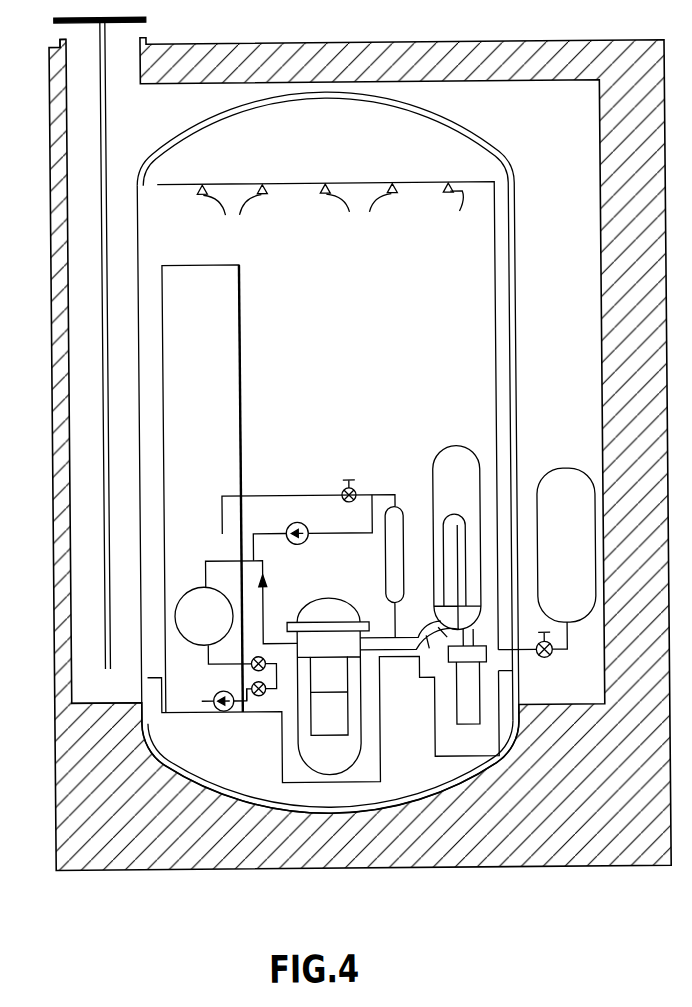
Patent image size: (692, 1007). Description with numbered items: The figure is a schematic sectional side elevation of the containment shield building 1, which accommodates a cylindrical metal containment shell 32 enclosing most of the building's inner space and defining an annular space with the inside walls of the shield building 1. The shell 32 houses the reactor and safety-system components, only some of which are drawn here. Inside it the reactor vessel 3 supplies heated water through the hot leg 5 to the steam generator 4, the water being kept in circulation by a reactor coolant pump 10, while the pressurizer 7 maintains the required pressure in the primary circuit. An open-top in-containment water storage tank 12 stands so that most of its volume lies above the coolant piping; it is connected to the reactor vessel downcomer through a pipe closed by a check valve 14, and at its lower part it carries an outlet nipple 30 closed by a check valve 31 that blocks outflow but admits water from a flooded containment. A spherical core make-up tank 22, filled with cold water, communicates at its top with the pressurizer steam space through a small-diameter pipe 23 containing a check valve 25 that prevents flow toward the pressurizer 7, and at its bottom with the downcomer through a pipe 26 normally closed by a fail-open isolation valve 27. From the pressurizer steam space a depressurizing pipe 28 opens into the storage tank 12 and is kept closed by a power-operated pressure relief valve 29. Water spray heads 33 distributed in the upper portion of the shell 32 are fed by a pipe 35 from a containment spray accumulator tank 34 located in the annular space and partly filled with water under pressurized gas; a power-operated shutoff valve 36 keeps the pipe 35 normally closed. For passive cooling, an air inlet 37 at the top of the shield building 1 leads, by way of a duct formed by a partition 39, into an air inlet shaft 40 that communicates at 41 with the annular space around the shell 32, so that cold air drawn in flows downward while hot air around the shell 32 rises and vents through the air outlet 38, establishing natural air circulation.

The shield building 1 is at (623, 303).
The reactor vessel 3 is at (328, 612).
The steam generator 4 is at (453, 460).
The hot leg 5 is at (403, 640).
The pressurizer 7 is at (390, 549).
The reactor coolant pump 10 is at (465, 695).
The in-containment water storage tank 12 is at (226, 405).
The check valve 14 is at (256, 697).
The core make-up tank 22 is at (198, 598).
The pipe 23 is at (262, 532).
The check valve 25 is at (305, 542).
The pipe 26 is at (225, 667).
The fail-open isolation valve 27 is at (253, 657).
The depressurizing pipe 28 is at (287, 493).
The pressure relief valve 29 is at (347, 502).
The outlet nipple 30 is at (238, 710).
The check valve 31 is at (213, 707).
The containment shell 32 is at (520, 227).
The water spray heads 33 is at (330, 209).
The containment spray accumulator tank 34 is at (563, 478).
The pipe 35 is at (495, 303).
The shutoff valve 36 is at (543, 663).
The air inlet 37 is at (62, 31).
The air outlet 38 is at (145, 30).
The partition 39 is at (103, 340).
The air inlet shaft 40 is at (83, 401).
The communication opening 41 is at (100, 688).